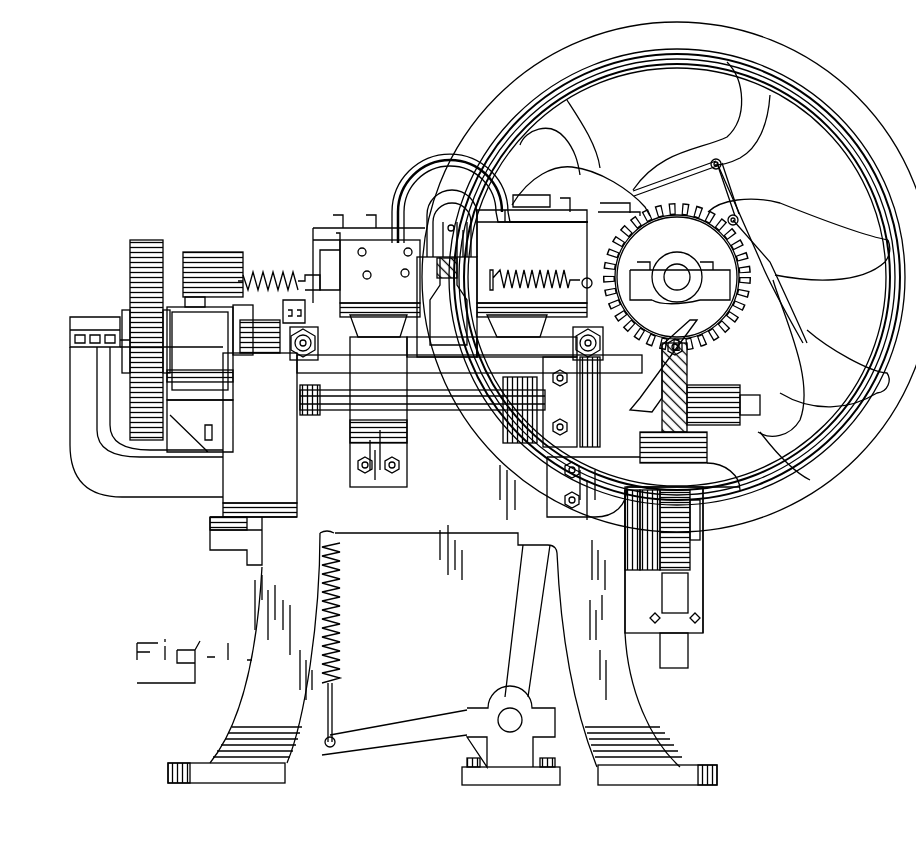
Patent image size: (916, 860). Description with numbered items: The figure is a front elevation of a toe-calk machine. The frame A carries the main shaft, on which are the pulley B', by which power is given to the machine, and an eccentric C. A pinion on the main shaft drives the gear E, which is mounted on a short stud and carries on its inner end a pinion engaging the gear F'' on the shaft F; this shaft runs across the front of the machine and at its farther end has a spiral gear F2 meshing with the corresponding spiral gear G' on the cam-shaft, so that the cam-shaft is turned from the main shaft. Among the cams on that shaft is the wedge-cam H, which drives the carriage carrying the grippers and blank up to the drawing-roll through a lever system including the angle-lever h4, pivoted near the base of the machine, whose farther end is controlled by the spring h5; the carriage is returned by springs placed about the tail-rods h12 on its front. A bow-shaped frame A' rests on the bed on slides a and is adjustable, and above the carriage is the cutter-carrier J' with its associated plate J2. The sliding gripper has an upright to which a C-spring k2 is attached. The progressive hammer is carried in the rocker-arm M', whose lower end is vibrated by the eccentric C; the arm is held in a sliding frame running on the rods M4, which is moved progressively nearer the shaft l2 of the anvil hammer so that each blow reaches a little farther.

The frame A is at (454, 607).
The bow-shaped frame A' is at (521, 205).
The pulley B' is at (213, 265).
The eccentric C is at (677, 277).
The gear E is at (130, 297).
The shaft F is at (422, 414).
The gear F'' is at (276, 313).
The spiral gear F2 is at (688, 365).
The spiral gear G' is at (677, 277).
The wedge-cam H is at (295, 358).
The cutter-carrier J' is at (558, 256).
The plate J2 is at (398, 280).
The slides a is at (448, 326).
The tail-rods h12 is at (612, 368).
The spring h5 is at (341, 615).
The angle-lever h4 is at (520, 620).
The C-spring k2 is at (803, 343).
The shaft of the anvil hammer l2 is at (745, 228).
The rocker-arm M' is at (679, 577).
The rods M4 is at (688, 548).